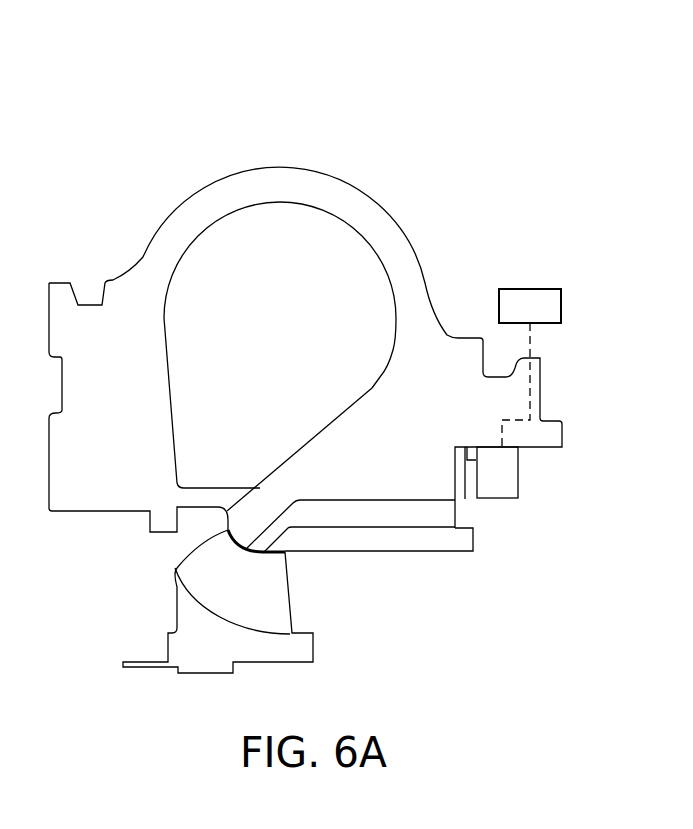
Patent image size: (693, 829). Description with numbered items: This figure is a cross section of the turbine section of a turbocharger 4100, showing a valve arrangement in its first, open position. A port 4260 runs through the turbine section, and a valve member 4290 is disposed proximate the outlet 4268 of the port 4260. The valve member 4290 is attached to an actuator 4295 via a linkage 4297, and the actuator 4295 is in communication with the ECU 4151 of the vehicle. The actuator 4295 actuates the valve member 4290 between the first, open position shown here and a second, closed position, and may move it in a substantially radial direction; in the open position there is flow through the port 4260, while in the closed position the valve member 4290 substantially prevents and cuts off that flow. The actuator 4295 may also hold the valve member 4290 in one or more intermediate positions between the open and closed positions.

The turbocharger 4100 is at (158, 145).
The ECU 4151 is at (531, 289).
The port 4260 is at (320, 515).
The outlet 4268 is at (458, 510).
The valve member 4290 is at (453, 470).
The actuator 4295 is at (508, 473).
The linkage 4297 is at (473, 452).